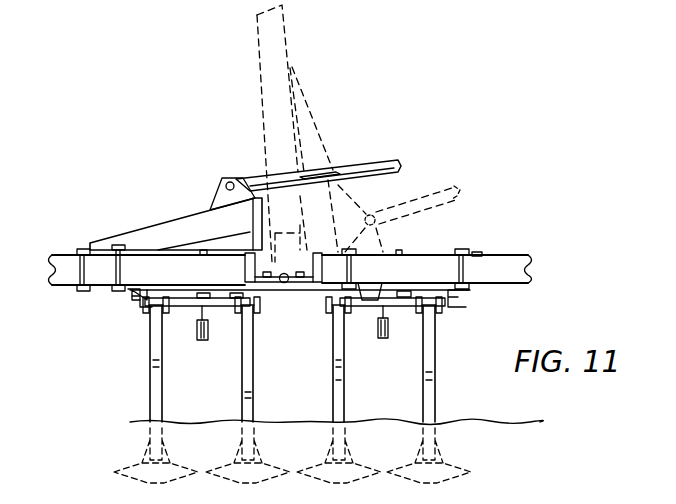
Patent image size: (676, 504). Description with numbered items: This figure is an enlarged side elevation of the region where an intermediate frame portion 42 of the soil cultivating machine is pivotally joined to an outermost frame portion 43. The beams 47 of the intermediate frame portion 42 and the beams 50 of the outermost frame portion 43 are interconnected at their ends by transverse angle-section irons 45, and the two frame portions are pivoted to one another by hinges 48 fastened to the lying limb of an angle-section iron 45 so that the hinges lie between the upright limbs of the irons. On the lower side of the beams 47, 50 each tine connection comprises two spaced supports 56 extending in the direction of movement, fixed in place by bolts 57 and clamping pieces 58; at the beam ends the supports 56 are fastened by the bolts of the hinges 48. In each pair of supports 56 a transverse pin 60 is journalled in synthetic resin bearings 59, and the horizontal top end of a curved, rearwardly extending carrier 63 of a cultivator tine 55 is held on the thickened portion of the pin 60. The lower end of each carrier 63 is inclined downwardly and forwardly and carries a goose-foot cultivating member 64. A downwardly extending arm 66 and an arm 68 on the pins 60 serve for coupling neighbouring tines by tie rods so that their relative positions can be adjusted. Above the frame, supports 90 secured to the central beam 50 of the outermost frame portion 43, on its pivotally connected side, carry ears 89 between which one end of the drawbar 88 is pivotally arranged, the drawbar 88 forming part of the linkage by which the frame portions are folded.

The intermediate frame portion 42 is at (310, 245).
The outermost frame portion 43 is at (59, 251).
The angle-section iron 45 is at (283, 274).
The beam 47 is at (537, 270).
The hinge 48 is at (286, 290).
The beam 50 is at (55, 289).
The cultivator tine 55 is at (241, 391).
The support 56 is at (130, 304).
The bolt 57 is at (86, 248).
The clamping piece 58 is at (474, 252).
The synthetic resin bearing 59 is at (146, 314).
The pin 60 is at (178, 296).
The carrier 63 is at (257, 392).
The cultivating member 64 is at (215, 467).
The arm 66 is at (380, 336).
The arm 68 is at (197, 332).
The drawbar 88 is at (373, 167).
The ear 89 is at (228, 176).
The support 90 is at (183, 212).